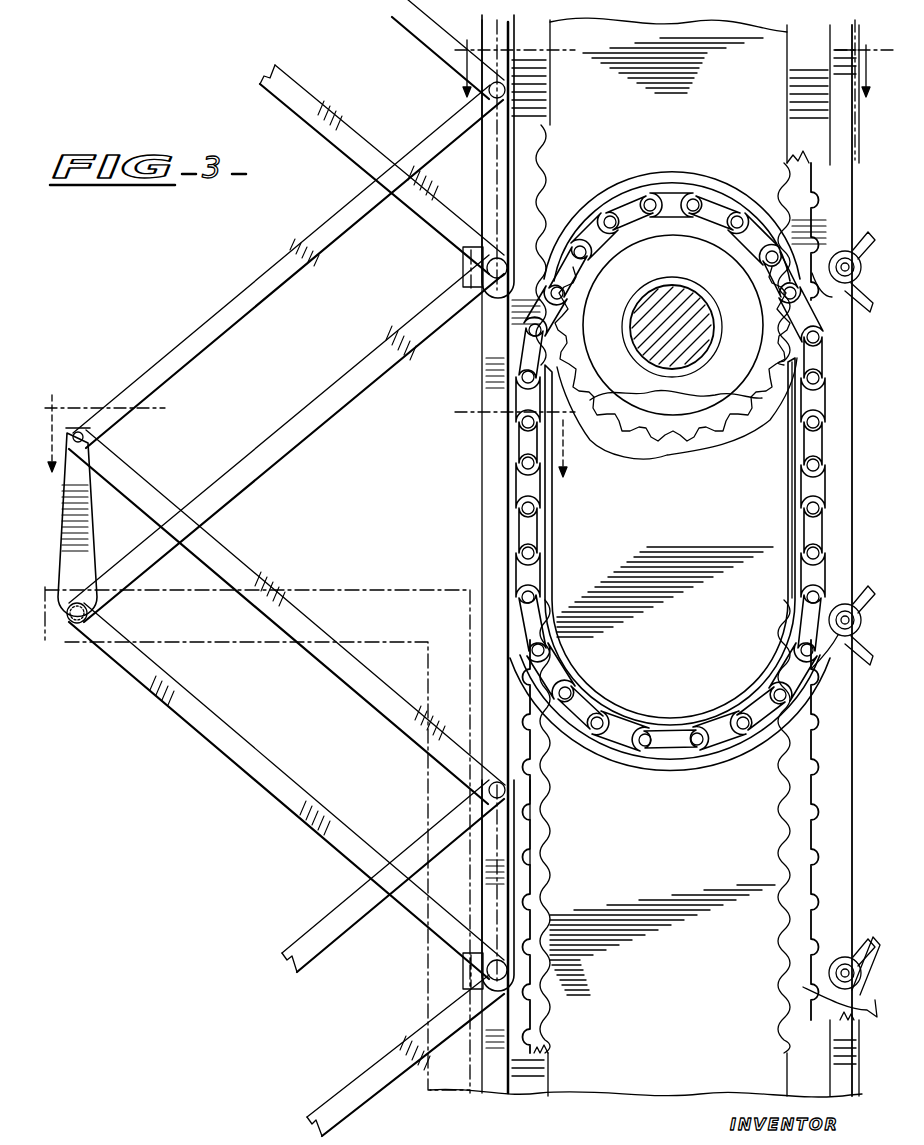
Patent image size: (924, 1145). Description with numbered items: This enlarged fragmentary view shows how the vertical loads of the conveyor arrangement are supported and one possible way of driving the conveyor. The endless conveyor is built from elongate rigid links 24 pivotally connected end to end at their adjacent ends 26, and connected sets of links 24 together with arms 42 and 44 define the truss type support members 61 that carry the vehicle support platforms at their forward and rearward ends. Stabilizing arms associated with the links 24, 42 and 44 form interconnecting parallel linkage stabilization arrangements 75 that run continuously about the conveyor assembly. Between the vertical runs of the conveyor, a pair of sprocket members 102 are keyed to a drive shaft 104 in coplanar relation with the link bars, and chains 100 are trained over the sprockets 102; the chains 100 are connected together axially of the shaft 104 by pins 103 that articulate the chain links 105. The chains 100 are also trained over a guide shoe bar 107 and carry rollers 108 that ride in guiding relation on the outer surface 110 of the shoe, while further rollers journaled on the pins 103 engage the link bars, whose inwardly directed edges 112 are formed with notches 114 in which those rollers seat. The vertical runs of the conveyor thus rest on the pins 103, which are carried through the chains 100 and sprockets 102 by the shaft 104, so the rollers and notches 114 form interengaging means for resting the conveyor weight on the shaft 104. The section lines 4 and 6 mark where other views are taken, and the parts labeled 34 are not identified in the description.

The section line 4- 4 is at (312, 430).
The section line 6- 6 is at (675, 84).
The elongate rigid links 24 is at (820, 187).
The adjacent ends 26 is at (817, 990).
The roller 34 is at (851, 283).
The arm 42 is at (306, 410).
The arm 44 is at (255, 788).
The truss type support members 61 is at (279, 568).
The parallel linkage stabilization arrangements 75 is at (211, 300).
The chains 100 is at (672, 274).
The sprocket members 102 is at (712, 230).
The pins 103 is at (610, 218).
The drive shaft 104 is at (653, 280).
The chain links 105 is at (597, 232).
The guide shoe bar 107 is at (558, 565).
The rollers 108 is at (670, 443).
The outer surface 110 is at (793, 490).
The inwardly directed edges 112 is at (533, 792).
The notches 114 is at (525, 857).